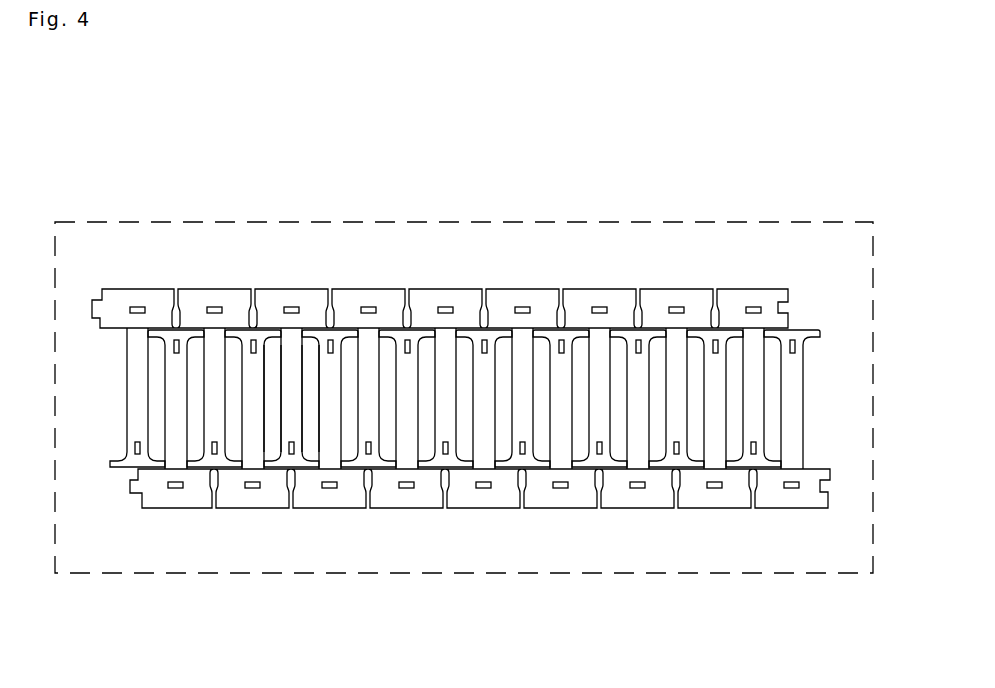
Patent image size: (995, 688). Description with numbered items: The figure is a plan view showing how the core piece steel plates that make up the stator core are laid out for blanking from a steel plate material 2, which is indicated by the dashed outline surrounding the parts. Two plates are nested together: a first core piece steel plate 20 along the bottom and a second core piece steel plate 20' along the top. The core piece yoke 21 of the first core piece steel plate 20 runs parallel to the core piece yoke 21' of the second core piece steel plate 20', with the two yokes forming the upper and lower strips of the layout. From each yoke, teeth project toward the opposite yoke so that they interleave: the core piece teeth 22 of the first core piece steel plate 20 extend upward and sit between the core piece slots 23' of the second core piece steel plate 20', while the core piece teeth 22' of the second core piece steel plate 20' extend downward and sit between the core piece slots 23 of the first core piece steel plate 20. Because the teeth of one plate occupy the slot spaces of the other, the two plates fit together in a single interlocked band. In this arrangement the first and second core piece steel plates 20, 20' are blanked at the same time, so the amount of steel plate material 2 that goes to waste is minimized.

The steel plate material 2 is at (628, 222).
The first core piece steel plate 20 is at (480, 499).
The second core piece steel plate 20' is at (440, 344).
The core piece yoke 21 is at (483, 547).
The core piece yoke 21' is at (300, 248).
The core piece teeth 22 is at (362, 448).
The core piece teeth 22' is at (302, 446).
The core piece slots 23 is at (349, 490).
The core piece slots 23' is at (224, 482).